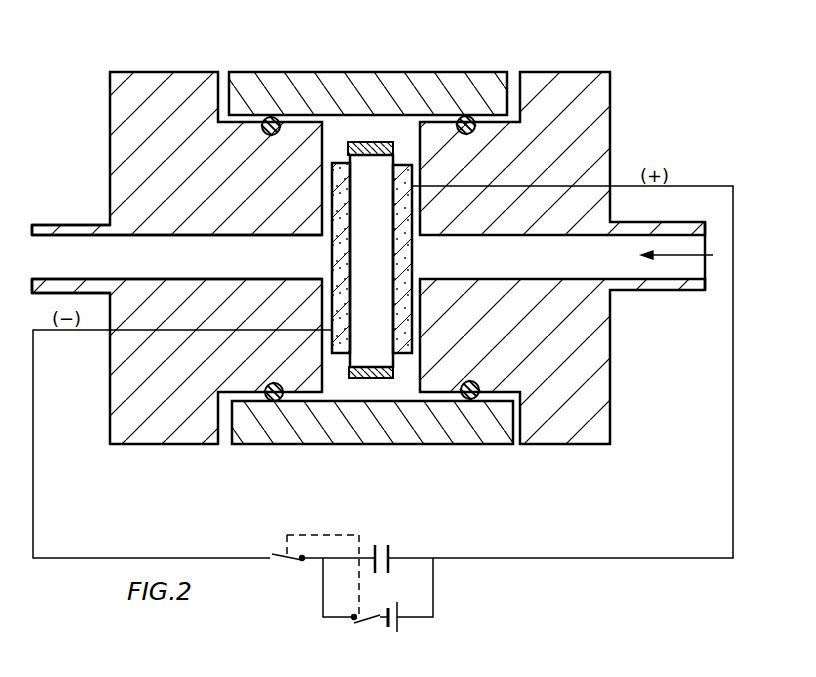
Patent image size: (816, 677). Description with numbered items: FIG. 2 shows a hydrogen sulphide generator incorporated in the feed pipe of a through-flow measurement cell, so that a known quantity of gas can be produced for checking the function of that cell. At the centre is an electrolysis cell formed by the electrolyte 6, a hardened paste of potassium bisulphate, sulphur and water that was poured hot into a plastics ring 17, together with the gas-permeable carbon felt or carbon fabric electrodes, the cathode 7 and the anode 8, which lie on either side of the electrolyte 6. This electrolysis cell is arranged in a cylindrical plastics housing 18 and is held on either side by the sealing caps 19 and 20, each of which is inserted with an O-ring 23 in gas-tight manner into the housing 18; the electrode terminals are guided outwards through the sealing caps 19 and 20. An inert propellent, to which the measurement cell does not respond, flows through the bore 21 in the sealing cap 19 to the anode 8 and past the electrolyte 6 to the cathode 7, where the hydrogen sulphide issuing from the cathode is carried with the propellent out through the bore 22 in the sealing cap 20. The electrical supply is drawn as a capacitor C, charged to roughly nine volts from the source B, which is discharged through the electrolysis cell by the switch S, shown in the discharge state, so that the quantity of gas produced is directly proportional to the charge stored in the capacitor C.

The electrolyte 6 is at (375, 357).
The cathode 7 is at (340, 358).
The anode 8 is at (403, 358).
The plastics ring 17 is at (373, 140).
The cylindrical housing 18 is at (429, 86).
The sealing cap 19 is at (595, 383).
The sealing cap 20 is at (128, 385).
The bore 21 is at (641, 270).
The bore 22 is at (80, 252).
The O-ring 23 is at (468, 116).
The switch S is at (301, 565).
The capacitor C is at (393, 552).
The source B is at (406, 595).